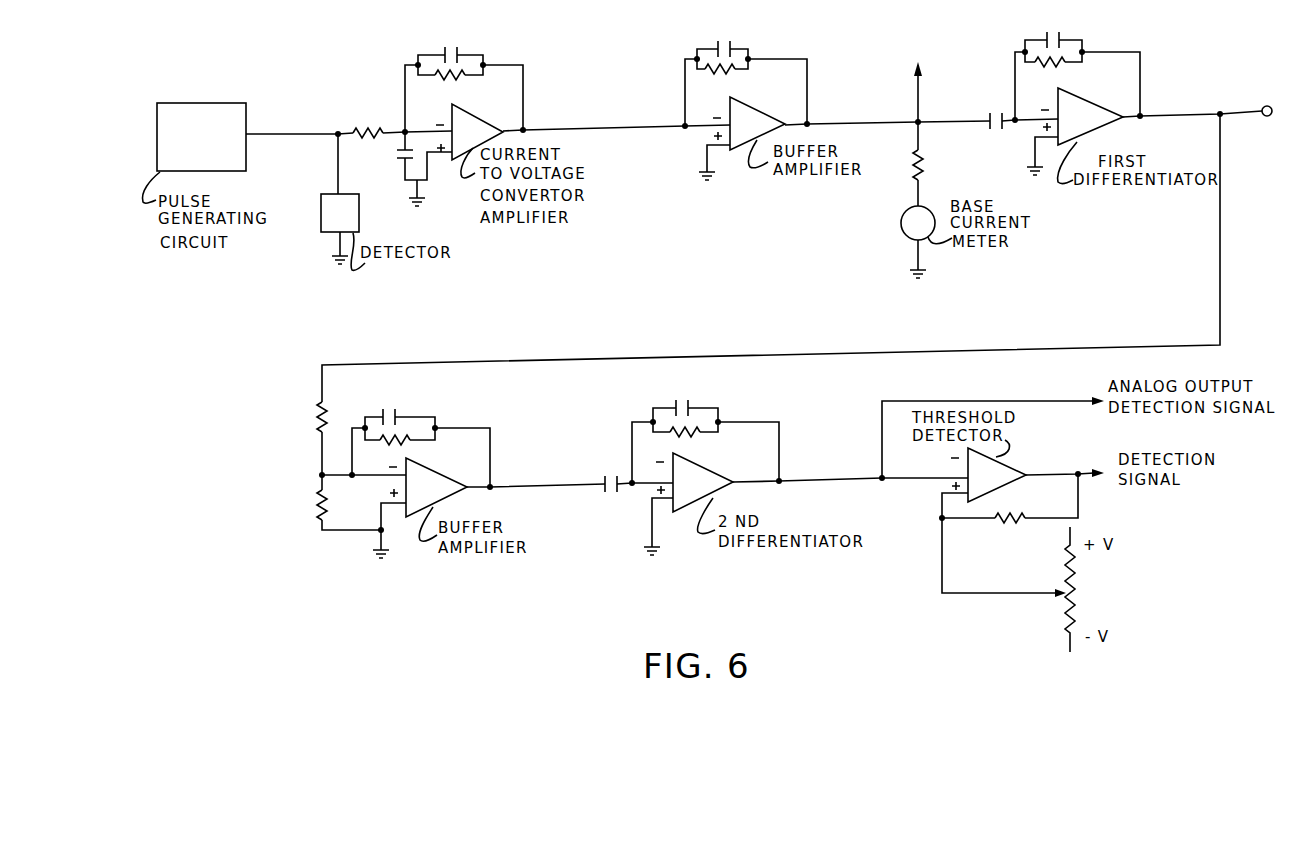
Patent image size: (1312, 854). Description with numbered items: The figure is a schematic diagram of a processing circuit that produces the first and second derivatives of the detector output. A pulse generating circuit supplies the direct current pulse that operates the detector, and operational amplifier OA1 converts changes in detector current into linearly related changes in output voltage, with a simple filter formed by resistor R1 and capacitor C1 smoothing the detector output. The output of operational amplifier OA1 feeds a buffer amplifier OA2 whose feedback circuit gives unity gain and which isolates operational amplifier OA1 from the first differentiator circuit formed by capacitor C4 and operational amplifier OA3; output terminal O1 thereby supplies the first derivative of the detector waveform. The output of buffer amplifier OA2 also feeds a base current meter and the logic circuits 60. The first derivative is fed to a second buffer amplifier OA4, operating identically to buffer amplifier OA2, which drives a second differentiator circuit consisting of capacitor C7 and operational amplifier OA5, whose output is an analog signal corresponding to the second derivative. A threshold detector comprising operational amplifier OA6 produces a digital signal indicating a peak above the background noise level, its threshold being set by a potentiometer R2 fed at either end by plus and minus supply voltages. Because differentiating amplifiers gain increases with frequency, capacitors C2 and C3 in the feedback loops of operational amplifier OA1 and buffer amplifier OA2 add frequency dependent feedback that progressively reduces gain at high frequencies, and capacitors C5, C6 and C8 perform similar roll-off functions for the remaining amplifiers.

The logic circuits 60 is at (947, 70).
The resistor R1 is at (368, 123).
The potentiometer R2 is at (1084, 589).
The capacitor C1 is at (397, 158).
The capacitor C2 is at (444, 47).
The capacitor C3 is at (717, 40).
The capacitor C4 is at (991, 131).
The capacitor C5 is at (1046, 32).
The capacitor C6 is at (393, 408).
The capacitor C7 is at (608, 473).
The capacitor C8 is at (682, 400).
The operational amplifier OA1 is at (469, 132).
The buffer amplifier OA2 is at (749, 123).
The operational amplifier OA3 is at (1082, 116).
The second buffer amplifier OA4 is at (428, 487).
The operational amplifier OA5 is at (694, 482).
The threshold detector OA6 is at (988, 475).
The output terminal O1 is at (1280, 120).